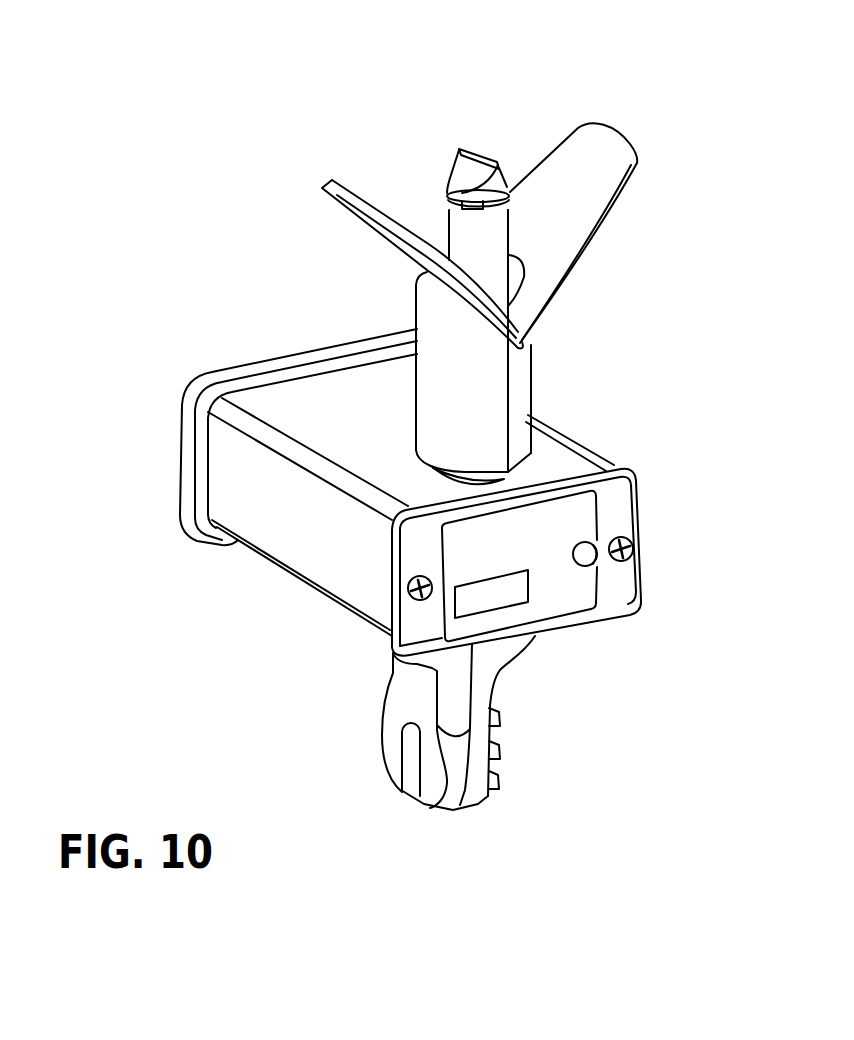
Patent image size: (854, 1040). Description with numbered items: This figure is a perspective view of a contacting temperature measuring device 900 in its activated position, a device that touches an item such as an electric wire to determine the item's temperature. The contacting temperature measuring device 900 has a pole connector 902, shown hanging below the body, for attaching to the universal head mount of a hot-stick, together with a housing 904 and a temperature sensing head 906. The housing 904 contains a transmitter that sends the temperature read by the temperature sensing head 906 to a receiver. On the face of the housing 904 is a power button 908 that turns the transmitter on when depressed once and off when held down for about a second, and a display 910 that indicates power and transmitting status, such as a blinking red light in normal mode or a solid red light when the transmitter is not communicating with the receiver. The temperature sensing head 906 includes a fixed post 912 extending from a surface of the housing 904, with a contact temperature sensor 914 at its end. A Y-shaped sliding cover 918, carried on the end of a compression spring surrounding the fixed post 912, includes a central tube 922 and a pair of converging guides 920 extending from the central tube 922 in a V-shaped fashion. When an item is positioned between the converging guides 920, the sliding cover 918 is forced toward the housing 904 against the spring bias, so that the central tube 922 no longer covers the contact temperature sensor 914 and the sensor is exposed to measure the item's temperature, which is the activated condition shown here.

The contacting temperature measuring device 900 is at (414, 420).
The pole connector 902 is at (378, 714).
The housing 904 is at (456, 491).
The temperature sensing head 906 is at (517, 257).
The power button 908 is at (594, 557).
The display 910 is at (512, 593).
The fixed post 912 is at (441, 145).
The contact temperature sensor 914 is at (481, 146).
The sliding cover 918 is at (517, 193).
The converging guides 920 is at (345, 190).
The central tube 922 is at (518, 392).